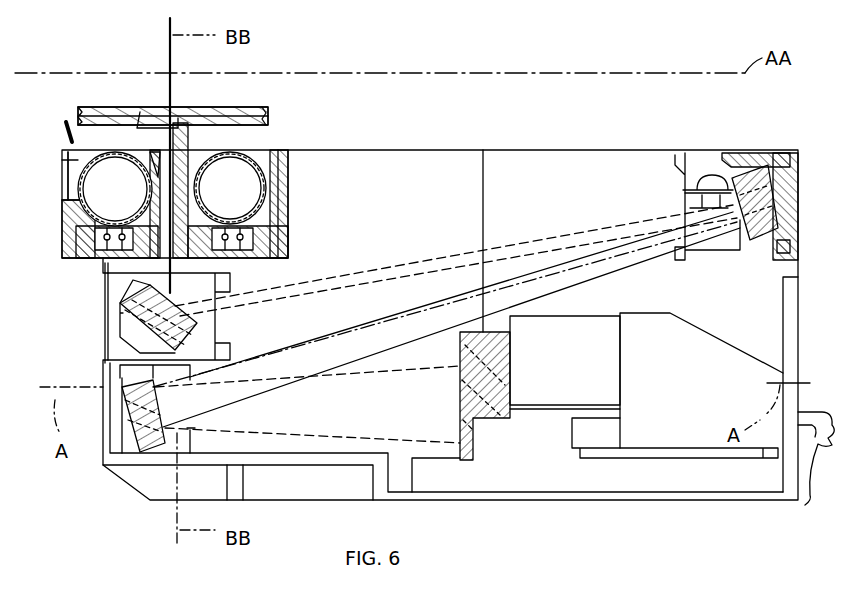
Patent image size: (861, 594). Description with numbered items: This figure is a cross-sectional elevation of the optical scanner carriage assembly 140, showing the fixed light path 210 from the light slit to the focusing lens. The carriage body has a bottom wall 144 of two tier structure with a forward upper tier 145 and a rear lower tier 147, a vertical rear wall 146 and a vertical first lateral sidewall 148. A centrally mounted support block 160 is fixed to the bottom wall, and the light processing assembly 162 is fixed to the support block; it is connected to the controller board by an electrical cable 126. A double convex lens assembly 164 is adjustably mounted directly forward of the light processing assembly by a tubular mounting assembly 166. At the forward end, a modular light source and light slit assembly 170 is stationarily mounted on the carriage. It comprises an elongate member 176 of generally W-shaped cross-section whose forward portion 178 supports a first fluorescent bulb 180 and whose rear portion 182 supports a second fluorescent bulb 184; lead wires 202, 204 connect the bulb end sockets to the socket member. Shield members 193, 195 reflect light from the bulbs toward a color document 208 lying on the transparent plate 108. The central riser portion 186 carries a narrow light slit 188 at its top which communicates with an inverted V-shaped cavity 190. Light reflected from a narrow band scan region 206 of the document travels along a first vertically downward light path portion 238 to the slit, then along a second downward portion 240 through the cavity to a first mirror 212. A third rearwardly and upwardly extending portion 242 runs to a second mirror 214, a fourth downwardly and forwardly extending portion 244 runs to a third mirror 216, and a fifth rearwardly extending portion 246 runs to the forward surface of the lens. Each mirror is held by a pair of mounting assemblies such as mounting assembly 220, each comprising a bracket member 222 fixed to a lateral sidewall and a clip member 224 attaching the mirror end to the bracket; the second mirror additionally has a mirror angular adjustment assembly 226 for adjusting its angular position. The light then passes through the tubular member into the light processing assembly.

The transparent plate 108 is at (258, 105).
The electrical cable 126 is at (805, 505).
The carriage assembly 140 is at (678, 116).
The bottom wall 144 is at (464, 492).
The forward upper tier 145 is at (277, 445).
The vertical rear wall 146 is at (783, 300).
The rear lower tier 147 is at (560, 492).
The vertical first lateral sidewall 148 is at (548, 170).
The support block 160 is at (640, 478).
The light processing assembly 162 is at (680, 340).
The double convex lens assembly 164 is at (487, 332).
The tubular mounting assembly 166 is at (600, 335).
The modular light source and light slit assembly 170 is at (66, 122).
The elongate member 176 is at (68, 240).
The forward portion 178 is at (68, 210).
The first fluorescent bulb 180 is at (75, 180).
The rear portion 182 is at (270, 233).
The second fluorescent bulb 184 is at (262, 177).
The central riser portion 186 is at (230, 145).
The light slit 188 is at (177, 147).
The inverted V-shaped cavity 190 is at (150, 152).
The shield member 193 is at (67, 162).
The shield member 195 is at (270, 152).
The lead wire 202 is at (97, 270).
The lead wire 204 is at (100, 350).
The narrow band scan region 206 is at (140, 110).
The color document 208 is at (98, 107).
The light path 210 is at (172, 92).
The first mirror 212 is at (197, 323).
The second mirror 214 is at (738, 175).
The third mirror 216 is at (140, 452).
The mounting assembly 220 is at (700, 177).
The bracket member 222 is at (735, 185).
The clip member 224 is at (790, 160).
The mirror angular adjustment assembly 226 is at (697, 182).
The first light path portion 238 is at (173, 120).
The second light path portion 240 is at (165, 263).
The third light path portion 242 is at (440, 257).
The fourth light path portion 244 is at (360, 322).
The fifth light path portion 246 is at (338, 438).